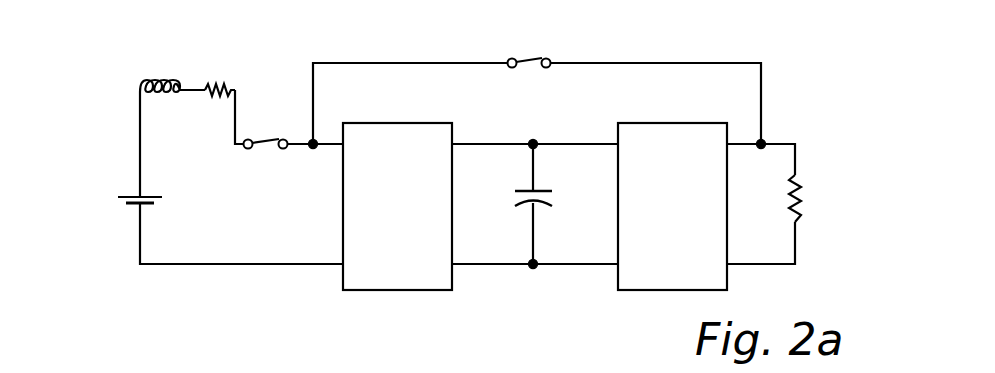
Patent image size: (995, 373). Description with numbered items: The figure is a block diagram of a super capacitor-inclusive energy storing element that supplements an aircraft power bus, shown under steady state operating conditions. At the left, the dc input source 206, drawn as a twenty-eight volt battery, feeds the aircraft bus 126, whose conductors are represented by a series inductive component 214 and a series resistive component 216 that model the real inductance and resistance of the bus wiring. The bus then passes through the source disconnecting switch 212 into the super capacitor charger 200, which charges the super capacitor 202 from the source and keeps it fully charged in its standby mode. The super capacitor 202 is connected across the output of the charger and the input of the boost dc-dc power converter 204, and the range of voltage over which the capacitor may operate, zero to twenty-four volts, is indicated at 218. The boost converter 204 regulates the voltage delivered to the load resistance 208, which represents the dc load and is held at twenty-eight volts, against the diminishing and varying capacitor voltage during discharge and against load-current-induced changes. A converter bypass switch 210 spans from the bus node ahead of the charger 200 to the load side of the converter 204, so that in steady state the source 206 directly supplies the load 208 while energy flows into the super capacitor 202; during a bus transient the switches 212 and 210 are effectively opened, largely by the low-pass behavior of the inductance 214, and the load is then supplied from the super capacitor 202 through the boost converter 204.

The aircraft bus 126 is at (235, 53).
The inductive component 214 is at (148, 82).
The resistive component 216 is at (210, 86).
The source disconnecting switch 212 is at (266, 138).
The converter bypass switch 210 is at (530, 58).
The dc input source 206 is at (138, 210).
The super capacitor charger 200 is at (378, 123).
The super capacitor 202 is at (546, 208).
The super capacitor voltage range 218 is at (592, 110).
The boost dc-dc power converter 204 is at (677, 123).
The load resistance 208 is at (800, 178).